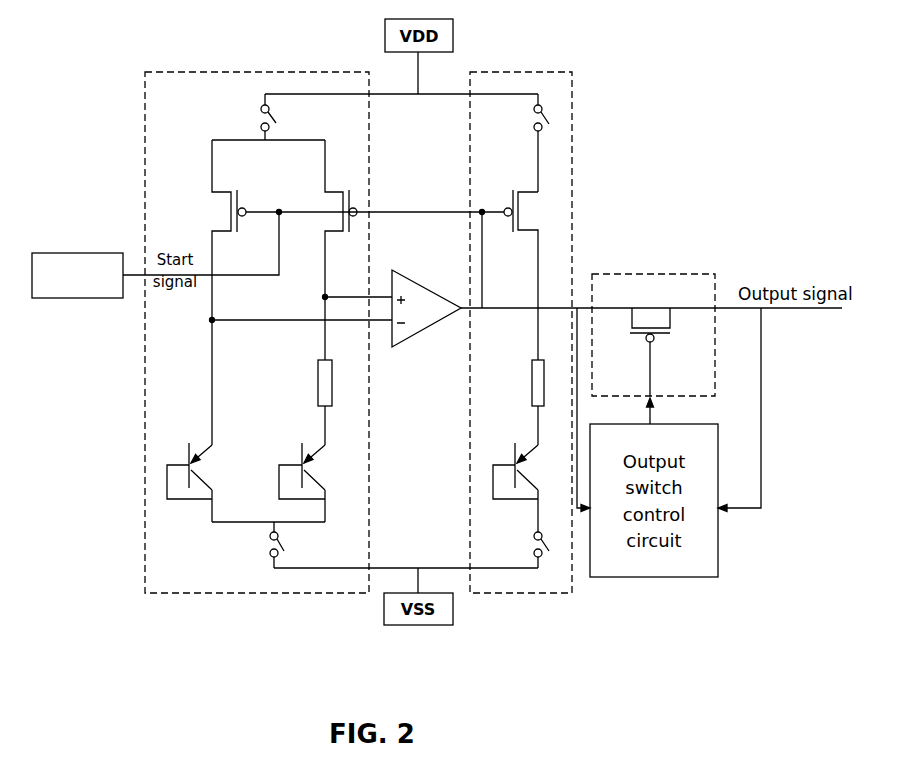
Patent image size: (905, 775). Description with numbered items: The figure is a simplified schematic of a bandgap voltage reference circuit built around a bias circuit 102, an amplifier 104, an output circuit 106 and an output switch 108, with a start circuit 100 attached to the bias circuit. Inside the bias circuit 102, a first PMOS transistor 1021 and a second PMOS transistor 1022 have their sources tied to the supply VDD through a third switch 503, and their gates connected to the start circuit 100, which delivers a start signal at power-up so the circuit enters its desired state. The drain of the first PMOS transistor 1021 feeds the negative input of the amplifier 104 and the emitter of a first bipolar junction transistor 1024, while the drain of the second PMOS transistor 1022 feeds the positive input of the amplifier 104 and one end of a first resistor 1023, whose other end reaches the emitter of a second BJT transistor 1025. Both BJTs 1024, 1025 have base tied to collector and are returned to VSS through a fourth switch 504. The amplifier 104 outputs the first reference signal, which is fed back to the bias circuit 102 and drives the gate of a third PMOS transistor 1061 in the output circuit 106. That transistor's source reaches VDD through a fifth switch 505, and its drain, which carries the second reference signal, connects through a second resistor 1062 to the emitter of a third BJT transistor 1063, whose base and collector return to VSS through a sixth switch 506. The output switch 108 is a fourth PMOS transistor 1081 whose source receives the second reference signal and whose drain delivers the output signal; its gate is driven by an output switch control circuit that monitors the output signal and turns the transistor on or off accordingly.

The start circuit 100 is at (53, 253).
The bias circuit 102 is at (198, 97).
The amplifier 104 is at (402, 273).
The output circuit 106 is at (545, 93).
The output switch 108 is at (618, 277).
The third switch 503 is at (273, 122).
The fourth switch 504 is at (272, 535).
The fifth switch 505 is at (545, 127).
The sixth switch 506 is at (537, 528).
The first PMOS transistor 1021 is at (212, 175).
The second PMOS transistor 1022 is at (323, 173).
The first resistor 1023 is at (323, 380).
The first bipolar junction transistor 1024 is at (190, 443).
The second BJT transistor 1025 is at (318, 443).
The third PMOS transistor 1061 is at (540, 175).
The second resistor 1062 is at (537, 382).
The third BJT transistor 1063 is at (518, 455).
The fourth PMOS transistor 1081 is at (638, 310).